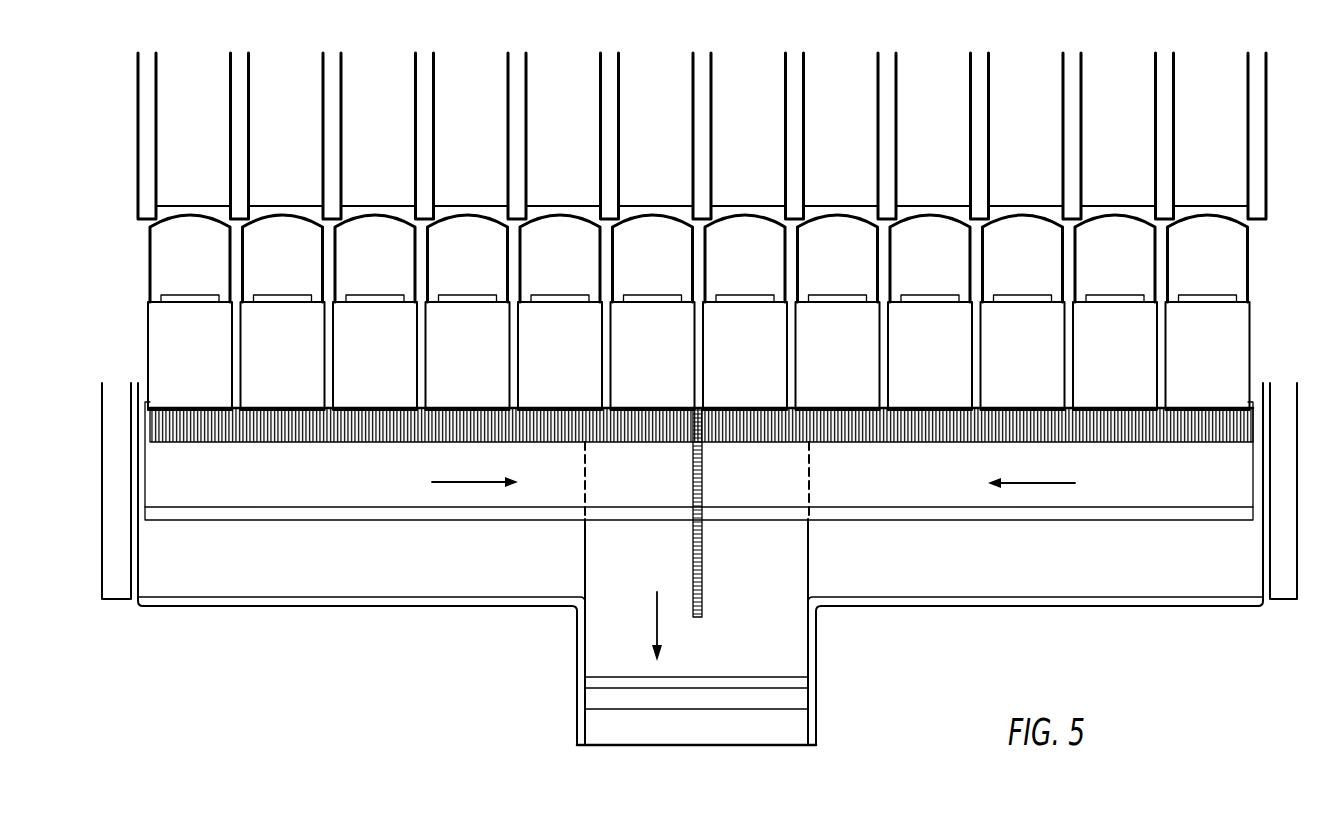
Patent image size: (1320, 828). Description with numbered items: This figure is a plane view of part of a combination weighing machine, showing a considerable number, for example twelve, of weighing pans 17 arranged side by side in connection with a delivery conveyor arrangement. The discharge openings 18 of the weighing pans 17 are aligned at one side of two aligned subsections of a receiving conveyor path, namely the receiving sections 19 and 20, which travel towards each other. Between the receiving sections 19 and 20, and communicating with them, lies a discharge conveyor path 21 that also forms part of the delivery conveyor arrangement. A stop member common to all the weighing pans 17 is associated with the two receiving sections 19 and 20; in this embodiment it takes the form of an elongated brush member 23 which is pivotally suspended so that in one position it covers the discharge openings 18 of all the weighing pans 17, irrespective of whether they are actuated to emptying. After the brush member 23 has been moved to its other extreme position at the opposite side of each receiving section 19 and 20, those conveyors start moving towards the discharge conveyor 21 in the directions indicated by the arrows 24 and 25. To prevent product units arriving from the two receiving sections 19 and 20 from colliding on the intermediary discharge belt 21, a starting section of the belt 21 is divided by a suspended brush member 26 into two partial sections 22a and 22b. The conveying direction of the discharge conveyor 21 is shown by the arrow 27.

The weighing pan 17 is at (1021, 345).
The discharge opening 18 is at (1006, 409).
The receiving section 19 is at (426, 571).
The receiving section 20 is at (1047, 575).
The discharge conveyor path 21 is at (825, 512).
The partial section 22a is at (654, 477).
The partial section 22b is at (771, 477).
The brush member 23 is at (888, 427).
The arrow 24 is at (1050, 481).
The arrow 25 is at (467, 481).
The suspended brush member 26 is at (703, 563).
The arrow 27 is at (655, 617).